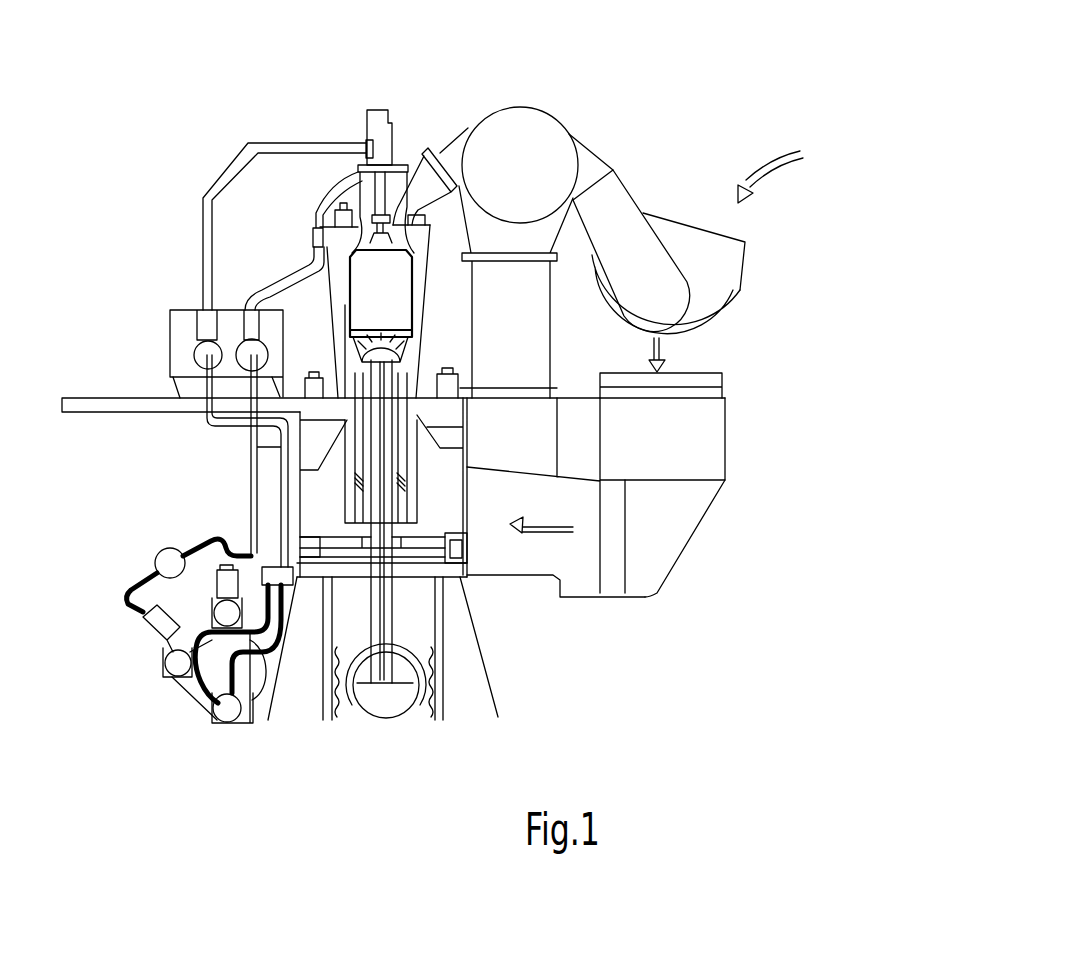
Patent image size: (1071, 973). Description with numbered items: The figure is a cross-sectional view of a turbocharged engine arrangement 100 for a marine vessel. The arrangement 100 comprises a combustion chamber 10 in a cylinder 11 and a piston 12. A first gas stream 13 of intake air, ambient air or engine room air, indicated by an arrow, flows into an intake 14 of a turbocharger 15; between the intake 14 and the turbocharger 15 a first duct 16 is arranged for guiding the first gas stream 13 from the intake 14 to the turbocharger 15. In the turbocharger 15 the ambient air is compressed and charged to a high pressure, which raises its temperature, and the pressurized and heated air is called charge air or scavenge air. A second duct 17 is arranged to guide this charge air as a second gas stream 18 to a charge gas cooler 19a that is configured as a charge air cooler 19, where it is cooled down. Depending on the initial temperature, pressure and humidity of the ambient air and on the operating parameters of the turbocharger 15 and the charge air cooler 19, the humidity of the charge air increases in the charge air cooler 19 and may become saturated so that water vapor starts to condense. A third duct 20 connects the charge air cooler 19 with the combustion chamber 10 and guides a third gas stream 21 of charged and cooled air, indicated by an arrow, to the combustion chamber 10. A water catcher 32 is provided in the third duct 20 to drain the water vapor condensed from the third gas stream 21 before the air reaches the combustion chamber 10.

The turbocharged engine arrangement 100 is at (118, 170).
The combustion chamber 10 is at (342, 300).
The cylinder 11 is at (368, 268).
The piston 12 is at (373, 362).
The first gas stream 13 is at (763, 163).
The intake 14 is at (690, 223).
The turbocharger 15 is at (680, 303).
The first duct 16 is at (745, 260).
The second duct 17 is at (723, 378).
The second gas stream 18 is at (660, 347).
The charge air cooler 19 is at (725, 423).
The charge gas cooler 19a is at (725, 450).
The third duct 20 is at (583, 600).
The third gas stream 21 is at (537, 573).
The water catcher 32 is at (628, 552).